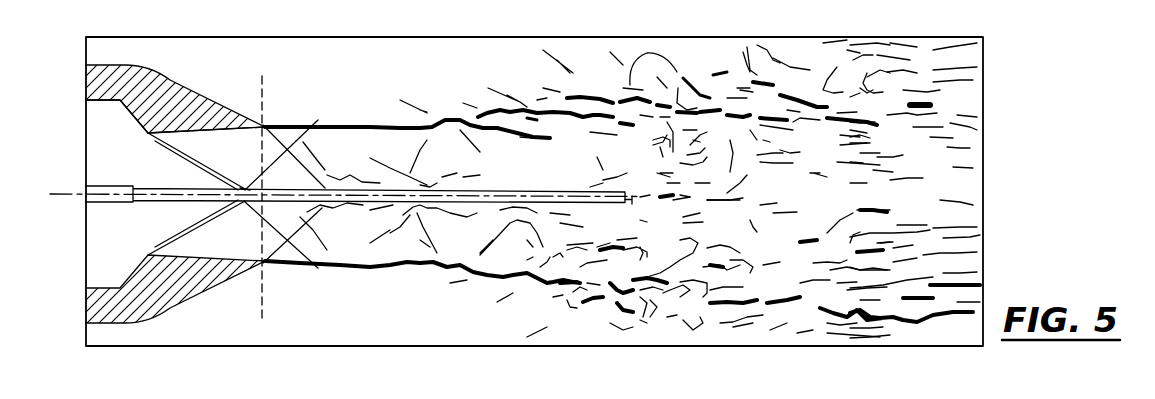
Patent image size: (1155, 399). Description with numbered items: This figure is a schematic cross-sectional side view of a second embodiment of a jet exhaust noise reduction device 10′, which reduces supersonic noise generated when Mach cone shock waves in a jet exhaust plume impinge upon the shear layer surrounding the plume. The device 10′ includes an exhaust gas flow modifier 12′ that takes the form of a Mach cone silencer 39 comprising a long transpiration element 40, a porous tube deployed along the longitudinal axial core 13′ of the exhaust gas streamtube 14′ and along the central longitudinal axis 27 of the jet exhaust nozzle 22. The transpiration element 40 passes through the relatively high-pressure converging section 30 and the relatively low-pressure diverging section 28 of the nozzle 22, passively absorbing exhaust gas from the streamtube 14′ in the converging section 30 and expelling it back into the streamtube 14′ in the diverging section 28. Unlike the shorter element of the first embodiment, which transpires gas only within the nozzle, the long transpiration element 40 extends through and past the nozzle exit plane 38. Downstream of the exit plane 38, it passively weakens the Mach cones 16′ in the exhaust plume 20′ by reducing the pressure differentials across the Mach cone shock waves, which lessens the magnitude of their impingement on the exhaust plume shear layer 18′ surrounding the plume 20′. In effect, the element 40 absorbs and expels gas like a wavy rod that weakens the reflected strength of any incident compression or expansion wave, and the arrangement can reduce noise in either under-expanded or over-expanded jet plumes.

The jet exhaust noise reduction device 10′ is at (509, 180).
The exhaust gas flow modifier 12′ is at (243, 178).
The longitudinal axial core 13′ is at (632, 204).
The exhaust gas streamtube 14′ is at (220, 240).
The Mach cones 16′ is at (372, 153).
The exhaust plume shear layer 18′ is at (198, 212).
The exhaust plume 20′ is at (381, 245).
The jet exhaust nozzle 22 is at (162, 100).
The central longitudinal axis 27 is at (50, 194).
The diverging section 28 is at (214, 131).
The converging section 30 is at (136, 125).
The nozzle exit plane 38 is at (264, 90).
The Mach cone silencer 39 is at (301, 179).
The long transpiration element 40 is at (301, 179).